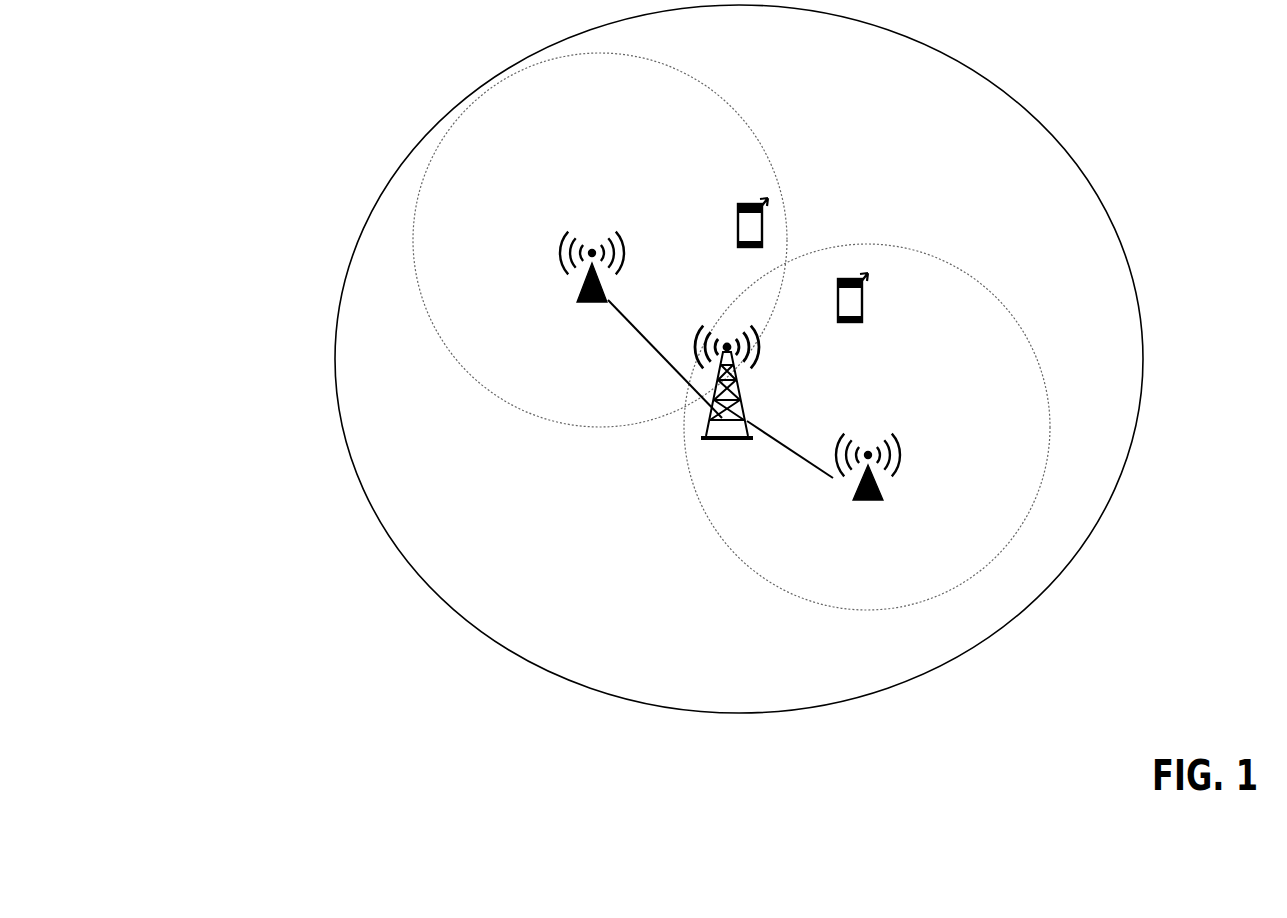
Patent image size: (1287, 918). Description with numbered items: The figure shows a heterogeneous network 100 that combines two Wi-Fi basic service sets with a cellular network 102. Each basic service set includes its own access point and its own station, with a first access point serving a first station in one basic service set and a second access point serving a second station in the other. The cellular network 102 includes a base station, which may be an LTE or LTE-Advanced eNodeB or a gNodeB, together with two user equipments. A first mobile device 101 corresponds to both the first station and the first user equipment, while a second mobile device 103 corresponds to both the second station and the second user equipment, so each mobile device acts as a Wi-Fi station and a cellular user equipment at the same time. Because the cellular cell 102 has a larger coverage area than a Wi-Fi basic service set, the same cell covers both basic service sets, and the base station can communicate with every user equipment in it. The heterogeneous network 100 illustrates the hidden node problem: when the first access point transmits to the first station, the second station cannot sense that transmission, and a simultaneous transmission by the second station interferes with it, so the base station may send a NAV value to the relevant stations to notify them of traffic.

The heterogeneous network 100 is at (308, 588).
The mobile device 101 is at (764, 228).
The cellular network 102 is at (1035, 122).
The mobile device 103 is at (864, 313).